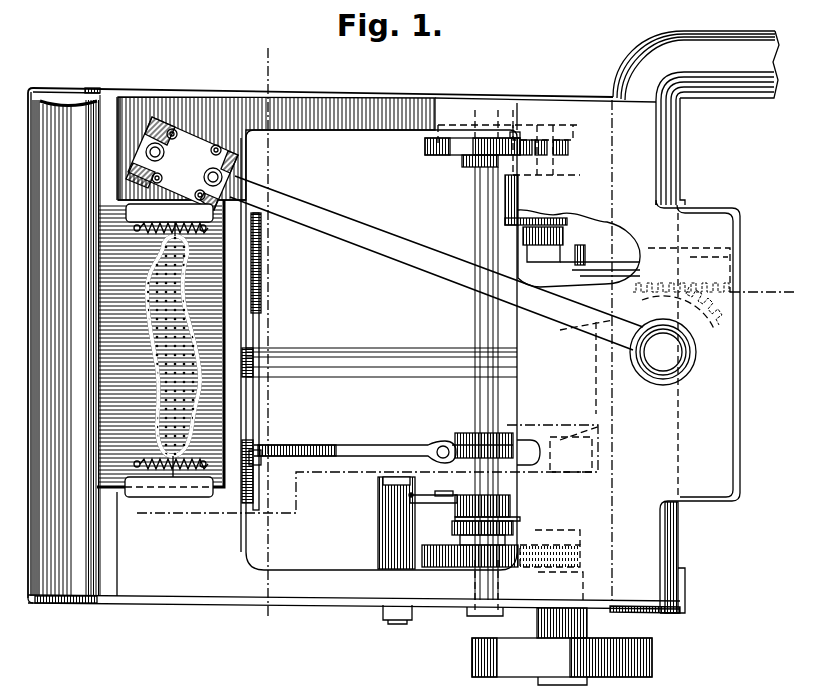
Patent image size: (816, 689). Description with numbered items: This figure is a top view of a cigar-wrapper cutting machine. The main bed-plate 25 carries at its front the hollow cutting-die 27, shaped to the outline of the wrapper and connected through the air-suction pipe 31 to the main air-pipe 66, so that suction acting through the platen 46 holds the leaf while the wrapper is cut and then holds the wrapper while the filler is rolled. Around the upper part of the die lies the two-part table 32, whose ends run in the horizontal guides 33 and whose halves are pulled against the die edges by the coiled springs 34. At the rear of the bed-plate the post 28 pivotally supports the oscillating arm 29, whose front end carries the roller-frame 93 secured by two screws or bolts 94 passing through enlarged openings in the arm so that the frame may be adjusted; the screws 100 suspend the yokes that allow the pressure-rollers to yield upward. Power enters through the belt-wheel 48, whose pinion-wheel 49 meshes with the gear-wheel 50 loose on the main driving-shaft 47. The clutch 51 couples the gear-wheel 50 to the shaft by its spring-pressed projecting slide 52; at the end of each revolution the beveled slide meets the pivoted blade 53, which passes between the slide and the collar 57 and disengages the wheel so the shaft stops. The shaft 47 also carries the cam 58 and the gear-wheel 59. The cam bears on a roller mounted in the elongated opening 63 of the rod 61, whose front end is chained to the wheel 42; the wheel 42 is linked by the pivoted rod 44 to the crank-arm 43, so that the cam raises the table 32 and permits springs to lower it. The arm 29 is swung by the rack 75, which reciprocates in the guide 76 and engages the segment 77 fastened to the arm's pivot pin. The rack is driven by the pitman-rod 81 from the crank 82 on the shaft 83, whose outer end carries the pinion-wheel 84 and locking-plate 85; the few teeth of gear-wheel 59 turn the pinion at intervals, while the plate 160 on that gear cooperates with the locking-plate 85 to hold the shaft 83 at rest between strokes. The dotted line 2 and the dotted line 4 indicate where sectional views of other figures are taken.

The dotted line 2 2 is at (268, 339).
The dotted line 4 4 is at (459, 411).
The main bed-plate 25 is at (411, 336).
The cutting-die 27 is at (153, 435).
The post 28 is at (660, 386).
The oscillating arm 29 is at (347, 218).
The air-suction pipe 31 is at (338, 360).
The two-part table 32 is at (160, 343).
The horizontal guides 33 is at (180, 516).
The coiled springs 34 is at (150, 232).
The wheel 42 is at (258, 471).
The crank-arm 43 is at (261, 245).
The pivoted rod 44 is at (259, 312).
The platen 46 is at (198, 340).
The main driving-shaft 47 is at (476, 325).
The belt-wheel 48 is at (576, 646).
The pinion-wheel 49 is at (580, 556).
The gear-wheel 50 is at (447, 570).
The clutch 51 is at (469, 533).
The projecting slide 52 is at (505, 500).
The pivoted blade 53 is at (442, 492).
The collar 57 is at (520, 519).
The cam 58 is at (470, 440).
The gear-wheel 59 is at (455, 152).
The rod 61 is at (330, 447).
The elongated opening 63 is at (435, 447).
The main air-pipe 66 is at (680, 548).
The rack 75 is at (733, 276).
The guide 76 is at (689, 261).
The segment 77 is at (705, 330).
The pitman-rod 81 is at (600, 260).
The crank 82 is at (563, 238).
The shaft 83 is at (545, 250).
The pinion-wheel 84 is at (568, 153).
The locking-plate 85 is at (573, 133).
The frame 93 is at (172, 115).
The screws or bolts 94 is at (165, 149).
The screws 100 is at (176, 130).
The plate 160 is at (453, 133).